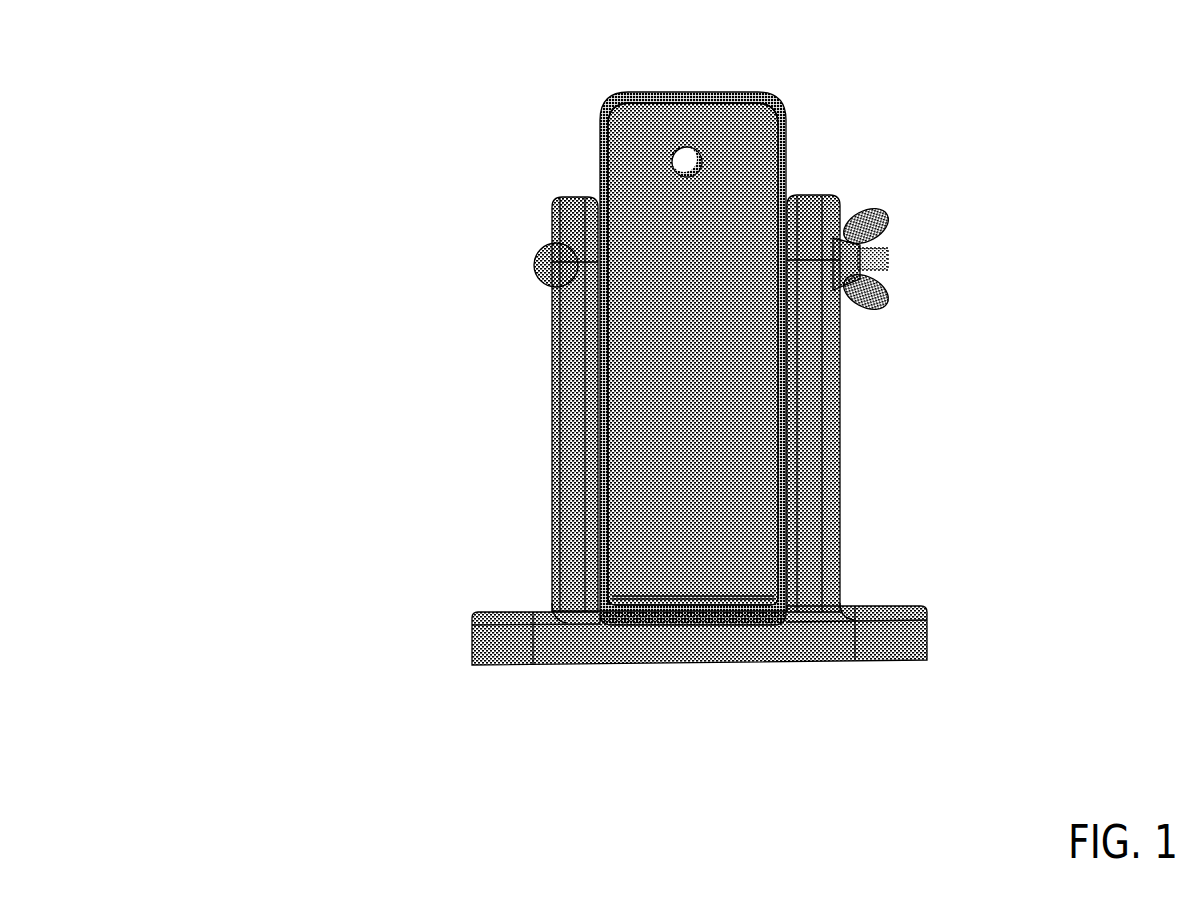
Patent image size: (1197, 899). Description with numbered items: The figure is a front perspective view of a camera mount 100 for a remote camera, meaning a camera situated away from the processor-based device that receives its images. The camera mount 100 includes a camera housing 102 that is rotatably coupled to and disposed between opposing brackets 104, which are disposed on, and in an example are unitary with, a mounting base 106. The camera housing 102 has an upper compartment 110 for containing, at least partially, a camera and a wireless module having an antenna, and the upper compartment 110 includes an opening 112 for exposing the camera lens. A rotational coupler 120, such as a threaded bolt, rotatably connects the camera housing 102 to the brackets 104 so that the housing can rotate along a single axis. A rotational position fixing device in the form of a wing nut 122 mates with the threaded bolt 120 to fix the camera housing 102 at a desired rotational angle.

The camera mount 100 is at (460, 184).
The camera housing 102 is at (610, 152).
The brackets 104 is at (554, 403).
The mounting base 106 is at (672, 663).
The upper compartment 110 is at (682, 117).
The opening 112 is at (692, 163).
The rotational coupler 120 is at (547, 283).
The wing nut 122 is at (870, 213).